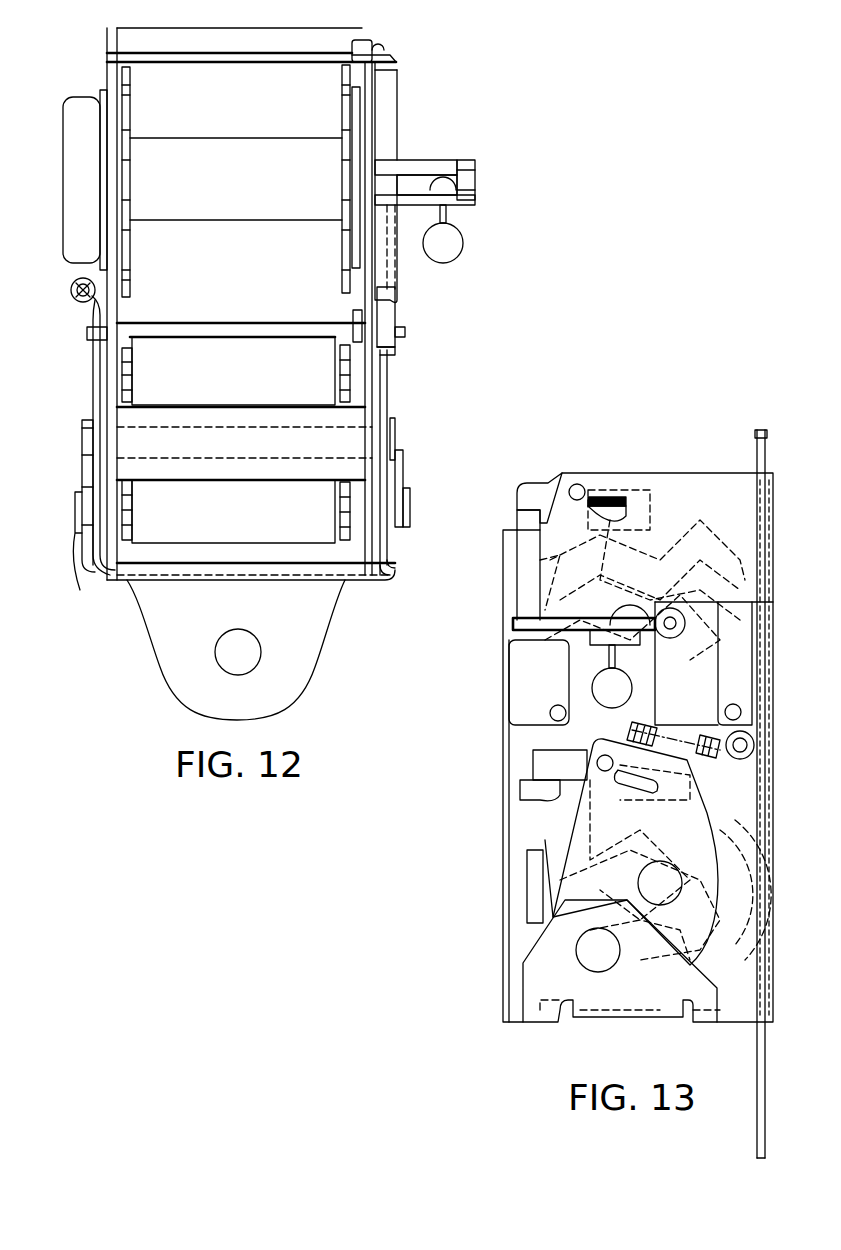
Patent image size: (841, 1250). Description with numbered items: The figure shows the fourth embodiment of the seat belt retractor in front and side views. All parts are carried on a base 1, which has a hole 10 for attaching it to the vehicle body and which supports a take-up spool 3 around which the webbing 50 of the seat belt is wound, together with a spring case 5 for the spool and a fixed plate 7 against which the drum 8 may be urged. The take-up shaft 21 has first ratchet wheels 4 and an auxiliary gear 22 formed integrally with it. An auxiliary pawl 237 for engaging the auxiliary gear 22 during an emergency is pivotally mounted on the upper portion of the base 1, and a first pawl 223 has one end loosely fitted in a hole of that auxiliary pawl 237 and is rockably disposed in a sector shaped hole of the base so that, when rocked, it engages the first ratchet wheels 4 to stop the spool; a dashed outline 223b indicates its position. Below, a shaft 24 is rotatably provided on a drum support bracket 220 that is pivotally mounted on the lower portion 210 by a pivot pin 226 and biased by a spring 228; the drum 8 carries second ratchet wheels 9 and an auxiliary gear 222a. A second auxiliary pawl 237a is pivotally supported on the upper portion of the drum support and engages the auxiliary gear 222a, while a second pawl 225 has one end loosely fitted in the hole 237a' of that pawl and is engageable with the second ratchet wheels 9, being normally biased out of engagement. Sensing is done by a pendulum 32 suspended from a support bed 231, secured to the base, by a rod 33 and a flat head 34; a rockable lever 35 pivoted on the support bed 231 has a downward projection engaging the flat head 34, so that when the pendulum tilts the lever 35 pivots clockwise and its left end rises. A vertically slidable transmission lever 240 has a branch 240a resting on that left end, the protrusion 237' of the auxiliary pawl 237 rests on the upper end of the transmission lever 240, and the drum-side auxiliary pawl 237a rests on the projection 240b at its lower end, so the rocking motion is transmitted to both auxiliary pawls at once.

In FIG. 12, the base 1 is at (160, 628).
In FIG. 13, the base 1 is at (700, 478).
In FIG. 12, the take-up spool 3 is at (230, 138).
In FIG. 12, the first ratchet wheels 4 is at (127, 115).
In FIG. 13, the first ratchet wheels 4 is at (696, 542).
In FIG. 12, the spring case 5 is at (80, 106).
In FIG. 12, the fixed plate 7 is at (195, 480).
In FIG. 13, the fixed plate 7 is at (527, 893).
In FIG. 12, the drum 8 is at (248, 338).
In FIG. 13, the drum 8 is at (699, 841).
In FIG. 12, the second ratchet wheels 9 is at (133, 375).
In FIG. 13, the second ratchet wheels 9 is at (740, 928).
In FIG. 12, the hole 10 is at (225, 648).
In FIG. 13, the hole 10 is at (766, 1118).
In FIG. 13, the take-up shaft 21 is at (622, 612).
In FIG. 12, the auxiliary gear 22 is at (352, 115).
In FIG. 13, the auxiliary gear 22 is at (692, 566).
In FIG. 12, the shaft 24 is at (396, 435).
In FIG. 13, the shaft 24 is at (640, 875).
In FIG. 12, the pendulum 32 is at (458, 256).
In FIG. 13, the pendulum 32 is at (630, 702).
In FIG. 12, the rod 33 is at (447, 222).
In FIG. 13, the rod 33 is at (617, 660).
In FIG. 12, the flat head 34 is at (458, 204).
In FIG. 13, the flat head 34 is at (600, 646).
In FIG. 13, the rockable lever 35 is at (554, 584).
In FIG. 13, the webbing 50 is at (757, 455).
In FIG. 12, the lower portion 210 is at (404, 470).
In FIG. 13, the lower portion 210 is at (523, 990).
In FIG. 12, the drum support bracket 220 is at (385, 395).
In FIG. 13, the drum support bracket 220 is at (545, 840).
In FIG. 12, the auxiliary gear 222a is at (352, 492).
In FIG. 13, the auxiliary gear 222a is at (705, 948).
In FIG. 13, the first pawl 223 is at (610, 496).
In FIG. 13, the slot 223b is at (652, 498).
In FIG. 12, the second pawl 225 is at (208, 325).
In FIG. 13, the second pawl 225 is at (583, 792).
In FIG. 12, the pivot pin 226 is at (78, 572).
In FIG. 13, the pivot pin 226 is at (575, 952).
In FIG. 13, the spring 228 is at (686, 663).
In FIG. 12, the support bed 231 is at (475, 186).
In FIG. 13, the support bed 231 is at (745, 616).
In FIG. 12, the auxiliary pawl 237 is at (342, 32).
In FIG. 13, the auxiliary pawl 237 is at (542, 486).
In FIG. 12, the protrusion 237' is at (396, 39).
In FIG. 13, the protrusion 237' is at (497, 506).
In FIG. 12, the auxiliary pawl 237a is at (327, 316).
In FIG. 13, the auxiliary pawl 237a is at (604, 765).
In FIG. 12, the hole 237a' is at (427, 317).
In FIG. 13, the hole 237a' is at (511, 807).
In FIG. 12, the transmission lever 240 is at (395, 102).
In FIG. 13, the transmission lever 240 is at (517, 562).
In FIG. 12, the branch 240a is at (418, 170).
In FIG. 13, the branch 240a is at (514, 620).
In FIG. 12, the projection 240b is at (393, 350).
In FIG. 13, the projection 240b is at (530, 790).